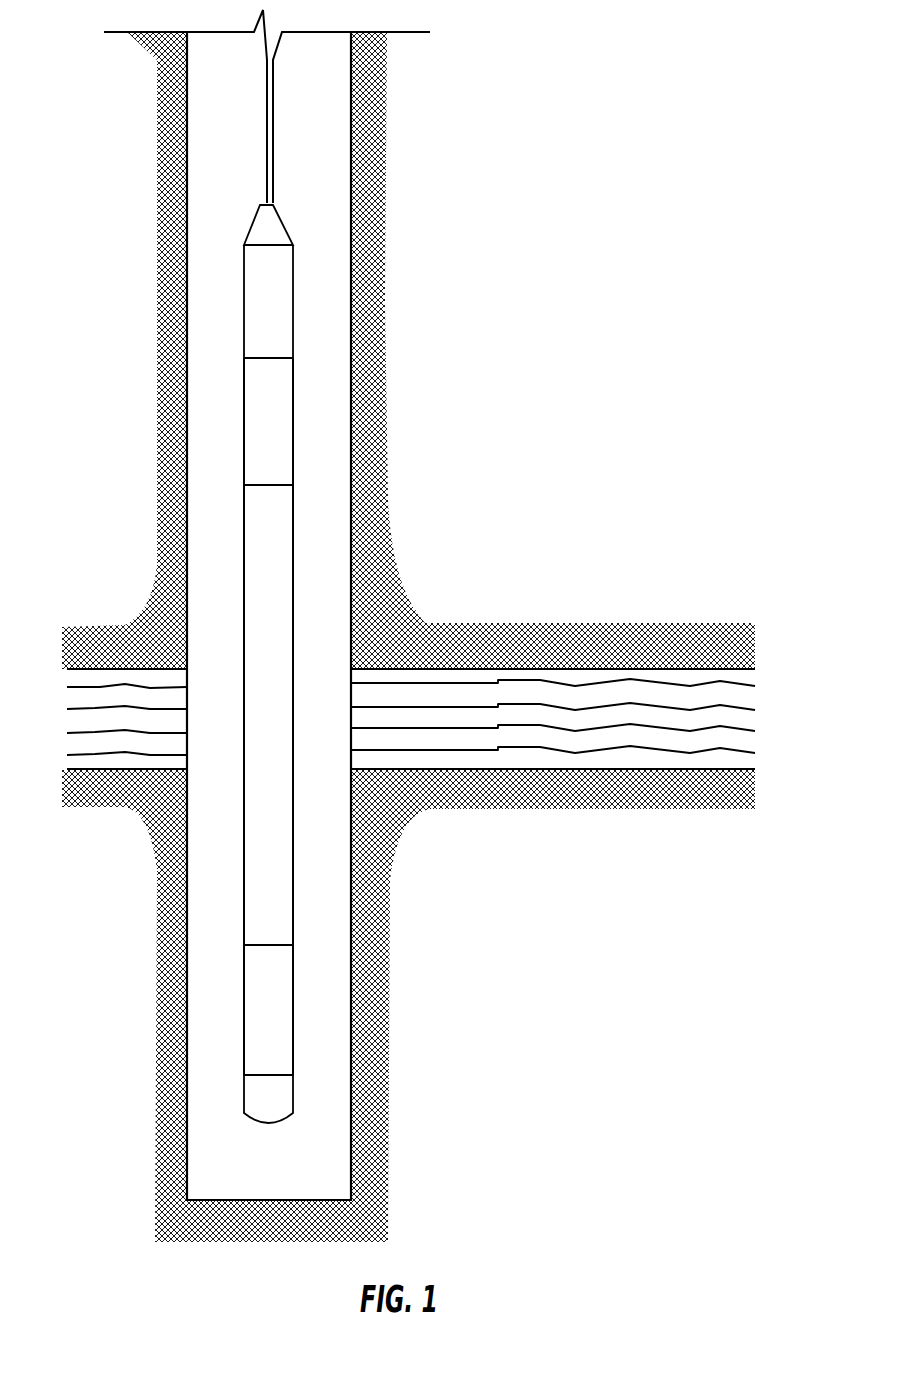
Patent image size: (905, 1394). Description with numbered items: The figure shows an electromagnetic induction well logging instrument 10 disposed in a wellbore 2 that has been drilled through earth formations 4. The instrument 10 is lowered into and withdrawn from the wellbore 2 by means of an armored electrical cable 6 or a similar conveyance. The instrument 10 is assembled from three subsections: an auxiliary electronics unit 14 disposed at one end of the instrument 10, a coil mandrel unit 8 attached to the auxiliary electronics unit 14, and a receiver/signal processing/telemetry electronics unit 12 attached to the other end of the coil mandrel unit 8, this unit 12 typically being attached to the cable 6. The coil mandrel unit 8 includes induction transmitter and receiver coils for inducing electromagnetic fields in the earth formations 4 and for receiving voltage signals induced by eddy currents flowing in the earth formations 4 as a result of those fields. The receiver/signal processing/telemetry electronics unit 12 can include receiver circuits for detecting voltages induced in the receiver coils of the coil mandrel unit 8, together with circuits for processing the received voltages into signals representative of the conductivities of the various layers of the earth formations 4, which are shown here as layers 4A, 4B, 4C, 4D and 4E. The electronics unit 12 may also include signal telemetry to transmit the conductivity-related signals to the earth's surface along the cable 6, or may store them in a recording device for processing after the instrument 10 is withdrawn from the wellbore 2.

The wellbore 2 is at (322, 123).
The earth formations 4 is at (74, 722).
The layer of the earth formations 4A is at (747, 678).
The layer of the earth formations 4B is at (747, 698).
The layer of the earth formations 4C is at (747, 717).
The layer of the earth formations 4D is at (747, 740).
The layer of the earth formations 4E is at (747, 757).
The armored electrical cable 6 is at (267, 140).
The coil mandrel unit 8 is at (255, 690).
The electromagnetic induction well logging instrument 10 is at (308, 329).
The receiver/signal processing/telemetry electronics unit 12 is at (256, 427).
The auxiliary electronics unit 14 is at (257, 1010).